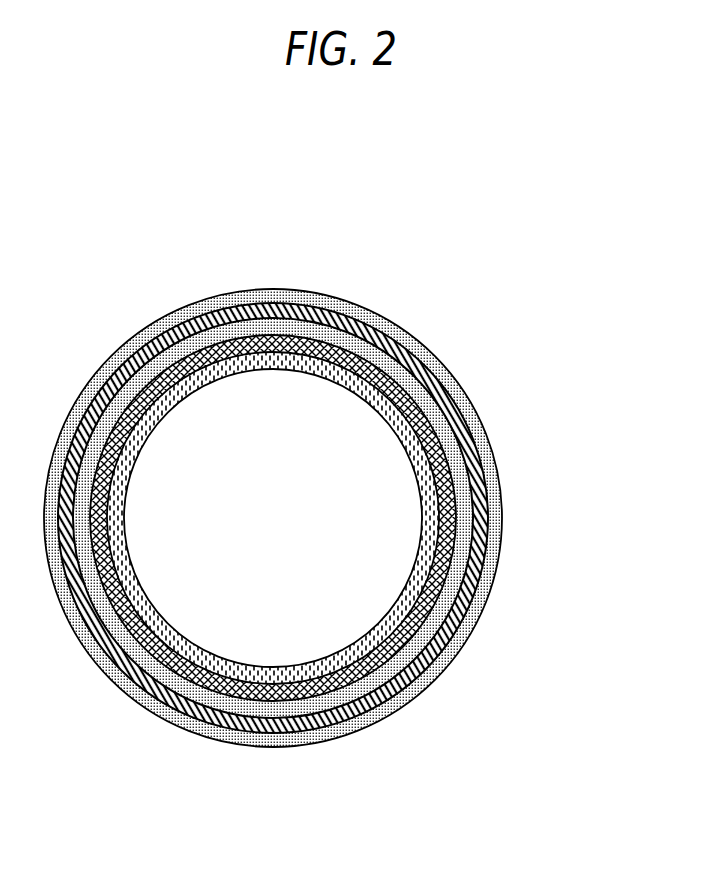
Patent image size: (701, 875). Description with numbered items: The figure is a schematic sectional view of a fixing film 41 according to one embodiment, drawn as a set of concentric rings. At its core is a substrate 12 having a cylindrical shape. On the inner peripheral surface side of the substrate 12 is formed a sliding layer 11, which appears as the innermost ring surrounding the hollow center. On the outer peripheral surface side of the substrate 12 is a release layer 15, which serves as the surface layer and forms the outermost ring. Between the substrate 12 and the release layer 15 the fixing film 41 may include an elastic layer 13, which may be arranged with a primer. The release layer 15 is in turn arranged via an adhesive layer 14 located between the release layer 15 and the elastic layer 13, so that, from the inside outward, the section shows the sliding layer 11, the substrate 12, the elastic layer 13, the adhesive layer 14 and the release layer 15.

The fixing film 41 is at (320, 460).
The sliding layer 11 is at (398, 413).
The substrate 12 is at (430, 431).
The elastic layer 13 is at (457, 462).
The adhesive layer 14 is at (482, 517).
The release layer 15 is at (492, 563).